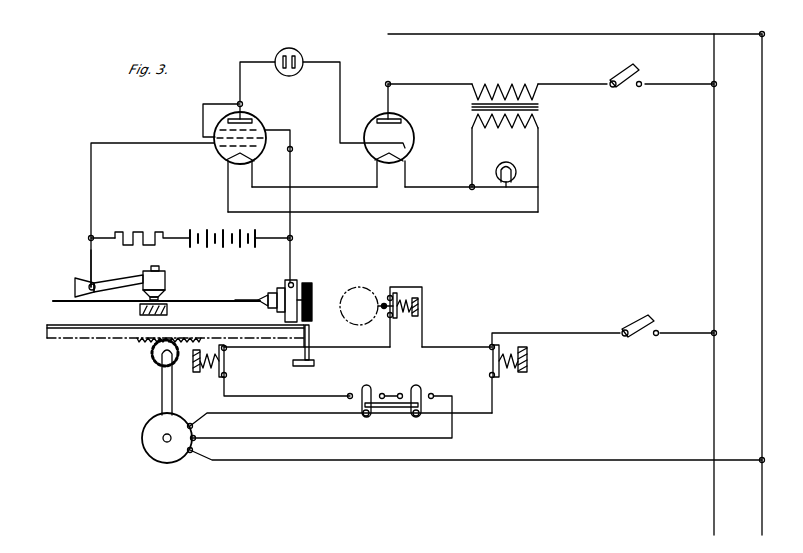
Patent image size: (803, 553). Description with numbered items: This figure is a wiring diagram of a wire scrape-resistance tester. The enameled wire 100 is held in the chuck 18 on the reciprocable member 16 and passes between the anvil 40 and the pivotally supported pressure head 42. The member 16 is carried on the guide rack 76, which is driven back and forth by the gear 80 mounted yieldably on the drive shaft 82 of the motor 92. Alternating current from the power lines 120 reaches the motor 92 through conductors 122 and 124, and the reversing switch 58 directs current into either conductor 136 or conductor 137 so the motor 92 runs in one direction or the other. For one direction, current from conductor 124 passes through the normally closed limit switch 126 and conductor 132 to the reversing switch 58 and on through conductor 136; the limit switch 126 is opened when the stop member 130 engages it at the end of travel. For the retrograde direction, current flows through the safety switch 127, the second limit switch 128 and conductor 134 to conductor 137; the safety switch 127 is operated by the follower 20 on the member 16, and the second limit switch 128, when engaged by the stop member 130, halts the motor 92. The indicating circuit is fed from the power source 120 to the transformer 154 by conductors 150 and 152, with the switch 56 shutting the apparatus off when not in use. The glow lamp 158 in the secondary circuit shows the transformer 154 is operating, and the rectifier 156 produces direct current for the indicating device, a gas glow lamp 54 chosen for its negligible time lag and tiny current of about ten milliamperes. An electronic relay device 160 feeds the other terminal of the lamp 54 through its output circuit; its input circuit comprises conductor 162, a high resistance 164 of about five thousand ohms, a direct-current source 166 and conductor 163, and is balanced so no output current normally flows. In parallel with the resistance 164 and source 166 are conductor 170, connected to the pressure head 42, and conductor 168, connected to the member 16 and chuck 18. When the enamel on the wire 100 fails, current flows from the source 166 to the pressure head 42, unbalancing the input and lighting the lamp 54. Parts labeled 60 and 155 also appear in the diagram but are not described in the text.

The reciprocable member 16 is at (296, 283).
The chuck 18 is at (259, 294).
The follower 20 is at (390, 318).
The anvil 40 is at (168, 311).
The pressure head 42 is at (166, 281).
The gas glow lamp 54 is at (300, 54).
The switch 56 is at (616, 88).
The reversing switch 58 is at (388, 410).
The spring / cam 60 is at (314, 292).
The guide rack 76 is at (100, 340).
The gear 80 is at (151, 358).
The drive shaft 82 is at (162, 398).
The motor 92 is at (160, 455).
The wire 100 is at (58, 300).
The power lines 120 is at (762, 508).
The conductor 122 is at (562, 458).
The conductor 124 is at (580, 333).
The limit switch 126 is at (500, 377).
The safety switch 127 is at (398, 300).
The second limit switch 128 is at (228, 370).
The stop member 130 is at (310, 364).
The conductor 132 is at (493, 400).
The conductor 134 is at (292, 396).
The conductor 136 is at (410, 438).
The conductor 137 is at (310, 420).
The conductor 150 is at (568, 34).
The conductor 152 is at (680, 86).
The transformer 154 is at (536, 104).
The conductor 155 is at (462, 226).
The rectifier 156 is at (376, 118).
The glow lamp 158 is at (517, 171).
The electronic relay device 160 is at (258, 118).
The conductor 162 is at (120, 143).
The conductor 163 is at (291, 181).
The high resistance 164 is at (132, 232).
The source of direct-current voltage 166 is at (210, 232).
The conductor 168 is at (294, 252).
The conductor 170 is at (91, 260).